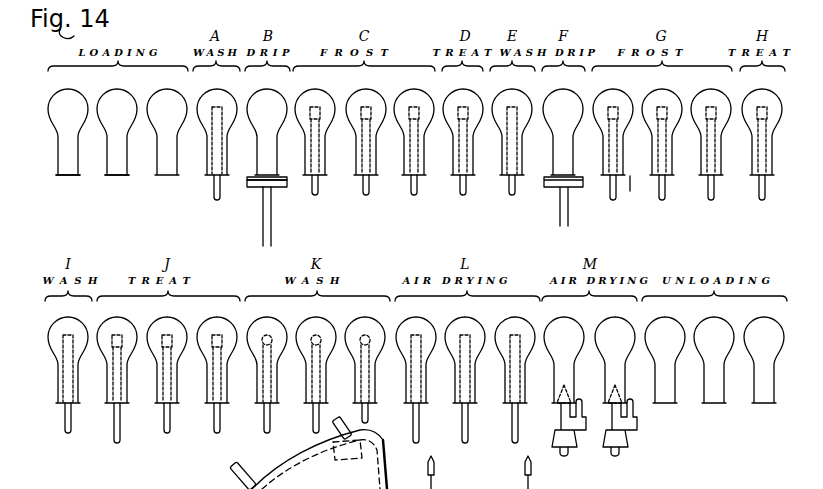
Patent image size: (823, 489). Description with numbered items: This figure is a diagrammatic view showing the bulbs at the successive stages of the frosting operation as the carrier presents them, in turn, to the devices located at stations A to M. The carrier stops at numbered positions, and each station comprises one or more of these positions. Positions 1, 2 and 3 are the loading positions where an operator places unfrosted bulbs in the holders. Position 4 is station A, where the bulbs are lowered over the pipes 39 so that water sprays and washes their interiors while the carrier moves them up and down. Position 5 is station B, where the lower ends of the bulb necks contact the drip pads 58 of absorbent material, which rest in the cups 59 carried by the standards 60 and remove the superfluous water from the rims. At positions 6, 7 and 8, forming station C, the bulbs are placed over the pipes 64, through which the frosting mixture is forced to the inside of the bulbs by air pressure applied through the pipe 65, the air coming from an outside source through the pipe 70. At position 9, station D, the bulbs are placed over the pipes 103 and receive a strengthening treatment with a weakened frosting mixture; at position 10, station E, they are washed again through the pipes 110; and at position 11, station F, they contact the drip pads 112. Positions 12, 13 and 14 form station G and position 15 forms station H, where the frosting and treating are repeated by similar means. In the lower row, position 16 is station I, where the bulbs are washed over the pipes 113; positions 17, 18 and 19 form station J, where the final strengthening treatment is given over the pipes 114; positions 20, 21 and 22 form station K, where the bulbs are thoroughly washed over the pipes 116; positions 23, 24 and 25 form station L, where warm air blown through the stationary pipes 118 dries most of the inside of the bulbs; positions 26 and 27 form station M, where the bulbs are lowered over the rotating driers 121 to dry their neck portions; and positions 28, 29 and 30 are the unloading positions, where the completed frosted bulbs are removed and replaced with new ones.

The carrier position 1 is at (68, 123).
The carrier position 2 is at (117, 123).
The carrier position 3 is at (167, 123).
The carrier position 4 is at (217, 135).
The carrier position 5 is at (267, 123).
The carrier position 6 is at (315, 123).
The carrier position 7 is at (366, 123).
The carrier position 8 is at (414, 133).
The carrier position 9 is at (463, 123).
The carrier position 10 is at (512, 123).
The carrier position 11 is at (563, 123).
The carrier position 12 is at (613, 123).
The carrier position 13 is at (662, 123).
The carrier position 14 is at (711, 135).
The carrier position 15 is at (762, 123).
The carrier position 16 is at (68, 351).
The carrier position 17 is at (117, 351).
The carrier position 18 is at (167, 351).
The carrier position 19 is at (217, 351).
The carrier position 20 is at (267, 351).
The carrier position 21 is at (316, 351).
The carrier position 22 is at (365, 361).
The carrier position 23 is at (416, 351).
The carrier position 24 is at (465, 351).
The carrier position 25 is at (515, 351).
The carrier position 26 is at (564, 351).
The carrier position 27 is at (615, 351).
The carrier position 28 is at (665, 351).
The carrier position 29 is at (76, 173).
The carrier position 30 is at (764, 351).
The pipes 39 is at (213, 122).
The drip pads 58 is at (280, 176).
The cups 59 is at (258, 187).
The standards 60 is at (271, 218).
The pipes 64 is at (662, 193).
The pipes 103 is at (762, 197).
The pipes 110 is at (513, 197).
The drip pads 112 is at (576, 178).
The pipes 113 is at (66, 431).
The pipes 114 is at (217, 426).
The pipes 116 is at (313, 424).
The stationary pipes 118 is at (420, 438).
The driers 121 is at (594, 428).
The pipe 70 is at (346, 418).
The pipe 65 is at (239, 476).